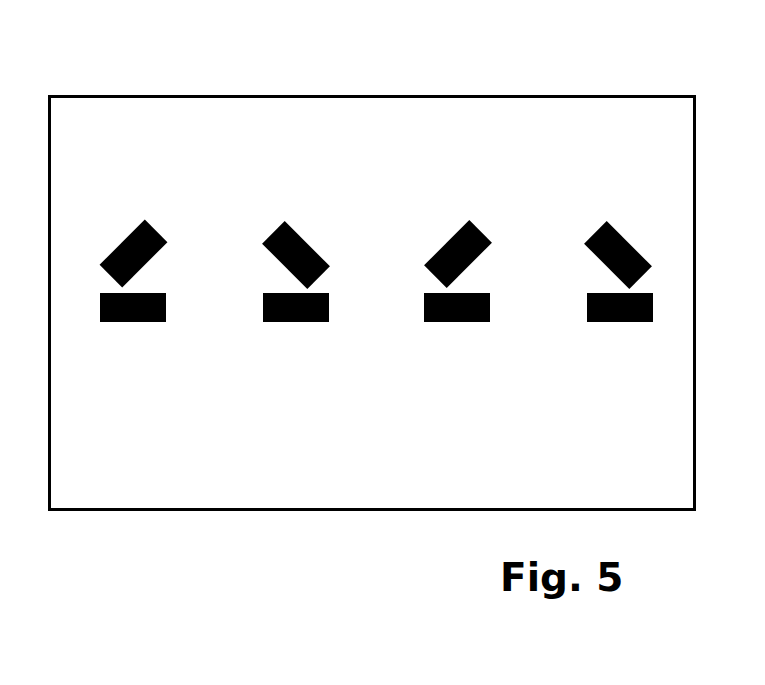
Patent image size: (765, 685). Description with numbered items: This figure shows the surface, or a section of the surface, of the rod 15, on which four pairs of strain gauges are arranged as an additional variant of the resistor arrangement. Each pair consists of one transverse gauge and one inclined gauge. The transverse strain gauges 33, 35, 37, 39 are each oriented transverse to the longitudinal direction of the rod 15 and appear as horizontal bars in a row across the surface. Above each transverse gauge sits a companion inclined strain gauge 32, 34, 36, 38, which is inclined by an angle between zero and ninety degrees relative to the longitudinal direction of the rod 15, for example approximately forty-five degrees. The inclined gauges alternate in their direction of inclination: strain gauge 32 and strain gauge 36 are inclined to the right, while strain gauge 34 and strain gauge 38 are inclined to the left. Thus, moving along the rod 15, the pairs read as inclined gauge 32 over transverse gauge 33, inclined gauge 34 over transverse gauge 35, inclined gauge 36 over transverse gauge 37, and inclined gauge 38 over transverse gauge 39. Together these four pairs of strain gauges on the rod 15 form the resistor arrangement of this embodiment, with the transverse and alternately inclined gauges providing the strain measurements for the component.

The rod 15 is at (550, 95).
The strain gauge 32 is at (158, 220).
The strain gauge 33 is at (147, 332).
The strain gauge 34 is at (298, 228).
The strain gauge 35 is at (285, 333).
The strain gauge 36 is at (482, 230).
The strain gauge 37 is at (437, 333).
The strain gauge 38 is at (615, 220).
The strain gauge 39 is at (600, 333).